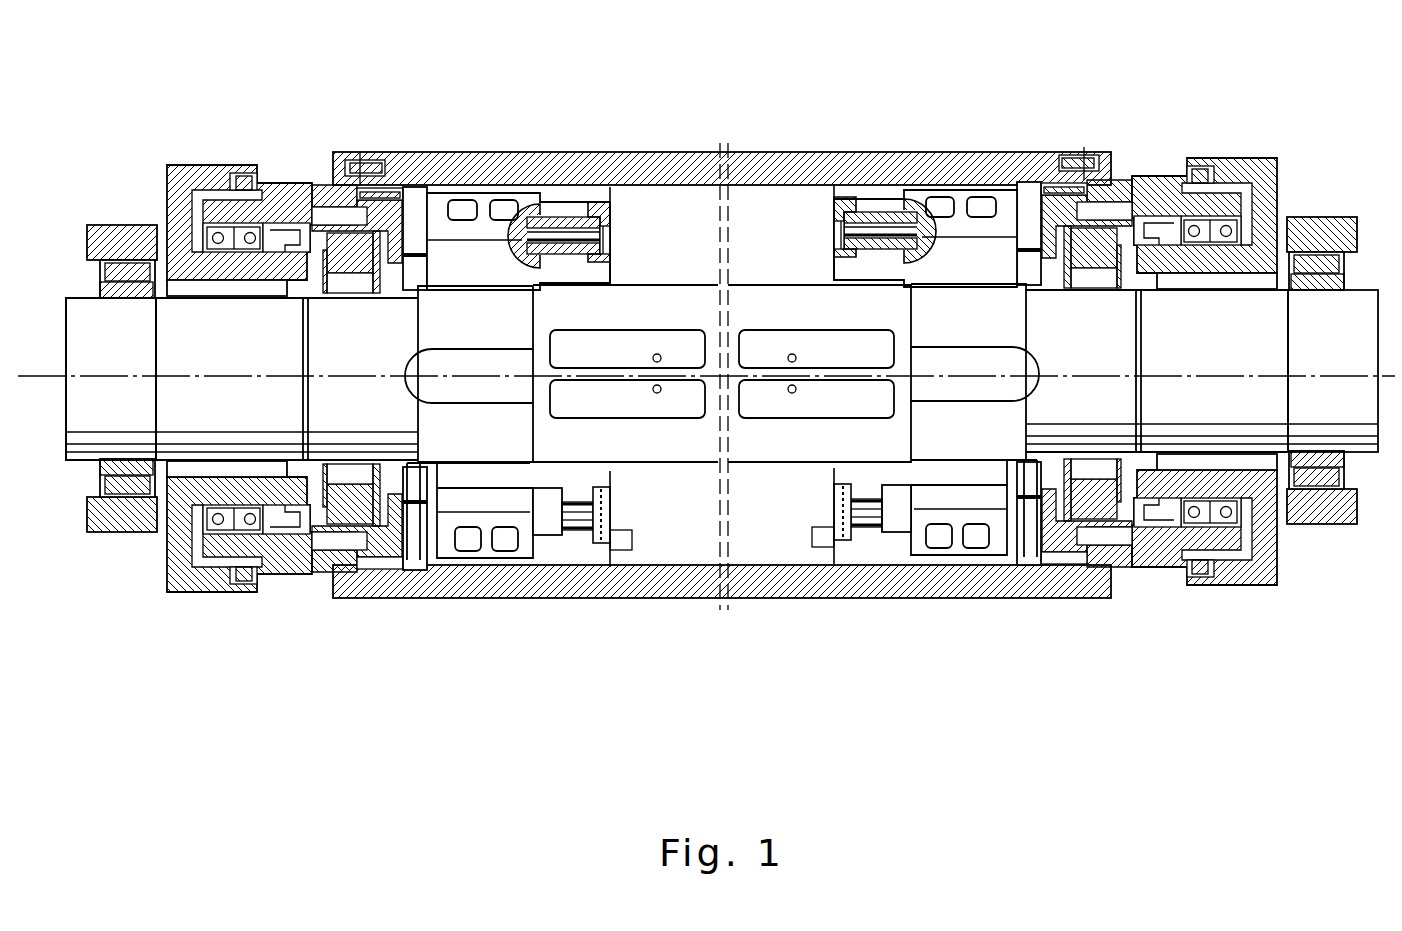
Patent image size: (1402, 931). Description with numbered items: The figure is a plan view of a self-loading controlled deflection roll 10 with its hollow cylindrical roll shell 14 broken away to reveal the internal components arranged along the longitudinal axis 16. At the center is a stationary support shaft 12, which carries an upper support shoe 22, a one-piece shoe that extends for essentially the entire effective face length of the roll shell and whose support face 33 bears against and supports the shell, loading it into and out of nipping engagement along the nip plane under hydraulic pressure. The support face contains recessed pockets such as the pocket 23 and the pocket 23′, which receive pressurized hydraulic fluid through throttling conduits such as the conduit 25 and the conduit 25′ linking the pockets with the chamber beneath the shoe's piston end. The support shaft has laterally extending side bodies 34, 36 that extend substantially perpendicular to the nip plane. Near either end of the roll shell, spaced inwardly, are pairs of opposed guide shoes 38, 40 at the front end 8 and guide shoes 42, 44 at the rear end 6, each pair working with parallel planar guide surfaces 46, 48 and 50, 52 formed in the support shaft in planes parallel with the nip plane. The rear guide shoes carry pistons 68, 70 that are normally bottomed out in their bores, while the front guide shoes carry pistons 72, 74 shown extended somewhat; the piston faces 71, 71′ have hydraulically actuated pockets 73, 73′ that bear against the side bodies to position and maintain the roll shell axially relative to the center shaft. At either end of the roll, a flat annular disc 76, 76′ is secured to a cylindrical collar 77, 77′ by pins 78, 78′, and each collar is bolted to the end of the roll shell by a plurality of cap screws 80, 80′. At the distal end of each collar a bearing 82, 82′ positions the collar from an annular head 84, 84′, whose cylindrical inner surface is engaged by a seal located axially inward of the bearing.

The rear end 6 is at (1323, 143).
The front end 8 is at (116, 145).
The self-loading controlled deflection roll 10 is at (585, 728).
The center stationary support shaft 12 is at (72, 298).
The hollow cylindrical roll shell 14 is at (515, 152).
The longitudinal axis 16 is at (45, 376).
The upper support shoe 22 is at (752, 277).
The recessed pocket 23 is at (680, 340).
The recessed pocket 23′ is at (680, 407).
The throttling conduit 25 is at (655, 354).
The throttling conduit 25′ is at (657, 393).
The support face 33 is at (698, 297).
The side body 34 is at (741, 207).
The side body 36 is at (744, 542).
The guide shoe 38 is at (440, 195).
The guide shoe 40 is at (450, 550).
The guide shoe 42 is at (1013, 192).
The guide shoe 44 is at (1002, 552).
The planar guide surface 46 is at (442, 285).
The planar guide surface 48 is at (455, 457).
The planar guide surface 50 is at (987, 292).
The planar guide surface 52 is at (985, 450).
The piston 68 is at (882, 200).
The piston 70 is at (877, 530).
The piston face 71 is at (600, 202).
The piston face 71′ is at (620, 543).
The piston 72 is at (562, 210).
The pocket 73 is at (611, 240).
The pocket 73′ is at (613, 508).
The piston 74 is at (573, 536).
The flat annular disc 76 is at (400, 562).
The flat annular disc 76′ is at (1055, 547).
The cylindrical collar 77 is at (300, 166).
The cylindrical collar 77′ is at (1145, 160).
The pin 78 is at (368, 162).
The pin 78′ is at (1063, 160).
The cap screw 80 is at (345, 160).
The cap screw 80′ is at (1100, 158).
The bearing 82 is at (227, 552).
The bearing 82′ is at (1188, 553).
The annular head 84 is at (170, 580).
The annular head 84′ is at (1257, 584).